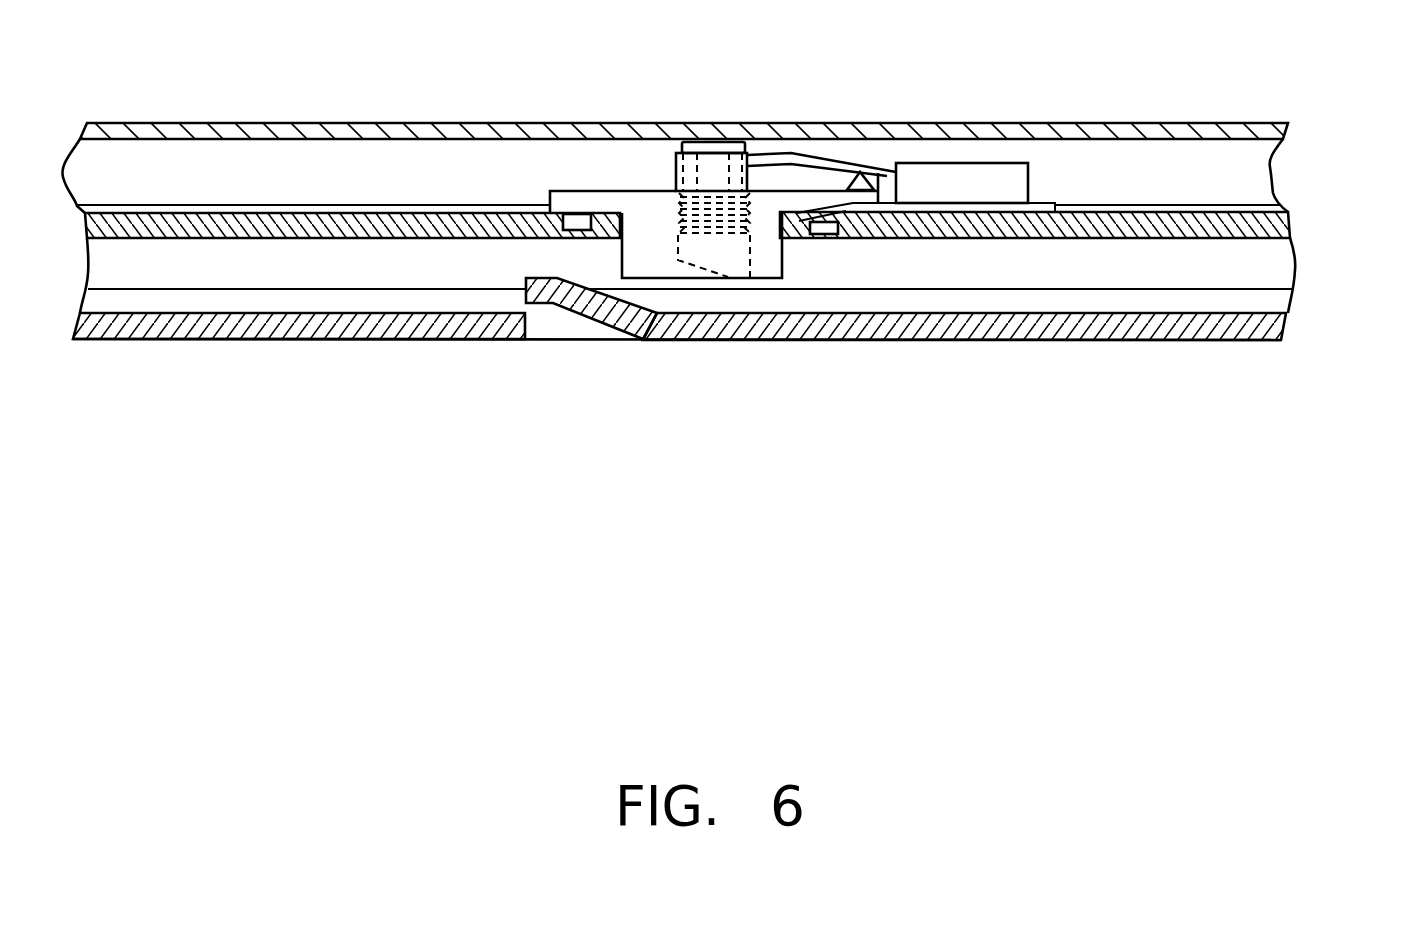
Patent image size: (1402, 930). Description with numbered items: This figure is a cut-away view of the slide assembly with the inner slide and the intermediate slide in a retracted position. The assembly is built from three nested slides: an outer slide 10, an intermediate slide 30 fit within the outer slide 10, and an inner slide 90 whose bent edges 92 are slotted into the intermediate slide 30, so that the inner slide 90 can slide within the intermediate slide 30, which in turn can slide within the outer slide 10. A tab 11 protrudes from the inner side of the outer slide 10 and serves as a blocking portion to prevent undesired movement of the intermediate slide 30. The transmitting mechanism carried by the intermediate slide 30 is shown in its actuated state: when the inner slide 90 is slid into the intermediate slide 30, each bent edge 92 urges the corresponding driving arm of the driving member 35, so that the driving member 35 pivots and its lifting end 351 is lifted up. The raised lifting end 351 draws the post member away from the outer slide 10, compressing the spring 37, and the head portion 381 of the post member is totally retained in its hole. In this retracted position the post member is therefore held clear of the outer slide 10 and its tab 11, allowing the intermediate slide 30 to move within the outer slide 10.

The outer slide 10 is at (1257, 330).
The tab 11 is at (593, 303).
The intermediate slide 30 is at (1265, 223).
The driving member 35 is at (845, 162).
The lifting end 351 is at (680, 167).
The spring 37 is at (678, 212).
The head portion 381 is at (735, 262).
The inner slide 90 is at (1267, 124).
The bent edges 92 is at (1250, 185).